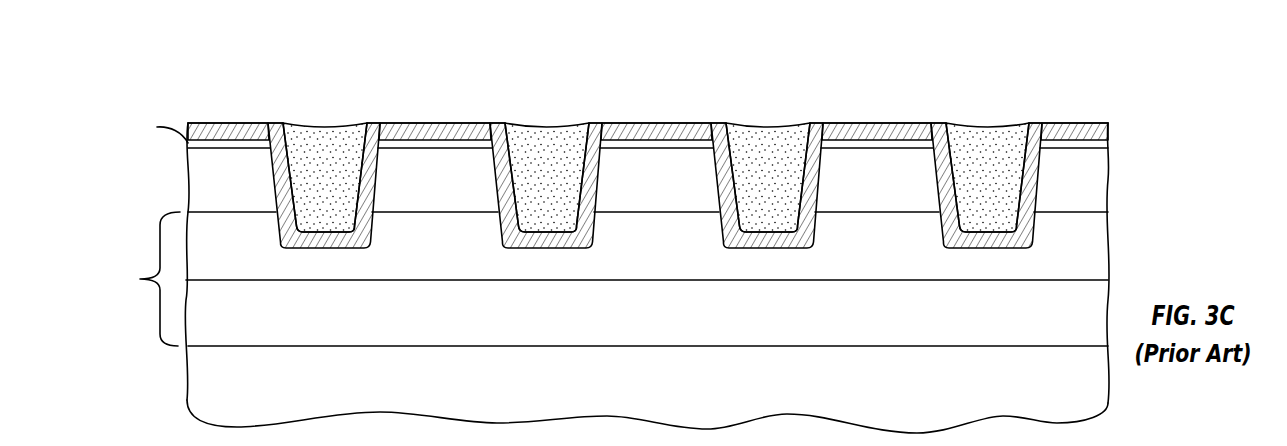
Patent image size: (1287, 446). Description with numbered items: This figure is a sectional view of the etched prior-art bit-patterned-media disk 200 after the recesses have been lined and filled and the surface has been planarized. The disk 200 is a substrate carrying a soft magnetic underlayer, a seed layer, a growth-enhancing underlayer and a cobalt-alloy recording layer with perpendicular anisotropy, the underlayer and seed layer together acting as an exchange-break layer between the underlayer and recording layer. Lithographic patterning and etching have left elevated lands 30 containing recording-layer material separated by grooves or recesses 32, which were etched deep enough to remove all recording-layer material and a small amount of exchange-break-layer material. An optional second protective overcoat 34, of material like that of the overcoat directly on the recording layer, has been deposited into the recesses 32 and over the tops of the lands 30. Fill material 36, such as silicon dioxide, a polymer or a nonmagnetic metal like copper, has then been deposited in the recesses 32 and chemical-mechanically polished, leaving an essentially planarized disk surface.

The disk 200 is at (200, 58).
The elevated lands 30 is at (233, 124).
The recesses 32 is at (332, 249).
The second protective overcoat 34 is at (207, 124).
The fill material 36 is at (320, 158).